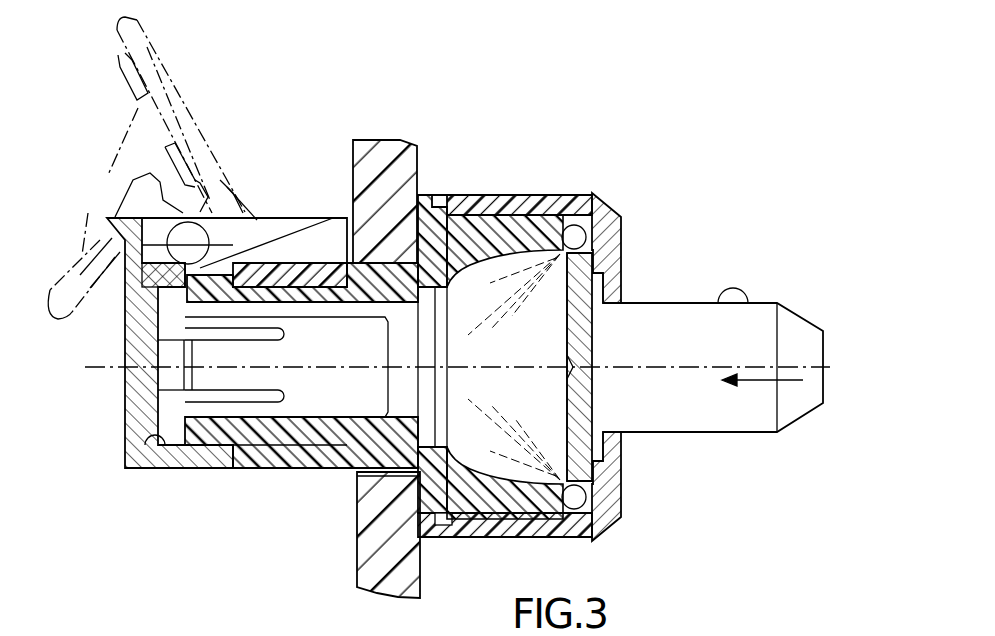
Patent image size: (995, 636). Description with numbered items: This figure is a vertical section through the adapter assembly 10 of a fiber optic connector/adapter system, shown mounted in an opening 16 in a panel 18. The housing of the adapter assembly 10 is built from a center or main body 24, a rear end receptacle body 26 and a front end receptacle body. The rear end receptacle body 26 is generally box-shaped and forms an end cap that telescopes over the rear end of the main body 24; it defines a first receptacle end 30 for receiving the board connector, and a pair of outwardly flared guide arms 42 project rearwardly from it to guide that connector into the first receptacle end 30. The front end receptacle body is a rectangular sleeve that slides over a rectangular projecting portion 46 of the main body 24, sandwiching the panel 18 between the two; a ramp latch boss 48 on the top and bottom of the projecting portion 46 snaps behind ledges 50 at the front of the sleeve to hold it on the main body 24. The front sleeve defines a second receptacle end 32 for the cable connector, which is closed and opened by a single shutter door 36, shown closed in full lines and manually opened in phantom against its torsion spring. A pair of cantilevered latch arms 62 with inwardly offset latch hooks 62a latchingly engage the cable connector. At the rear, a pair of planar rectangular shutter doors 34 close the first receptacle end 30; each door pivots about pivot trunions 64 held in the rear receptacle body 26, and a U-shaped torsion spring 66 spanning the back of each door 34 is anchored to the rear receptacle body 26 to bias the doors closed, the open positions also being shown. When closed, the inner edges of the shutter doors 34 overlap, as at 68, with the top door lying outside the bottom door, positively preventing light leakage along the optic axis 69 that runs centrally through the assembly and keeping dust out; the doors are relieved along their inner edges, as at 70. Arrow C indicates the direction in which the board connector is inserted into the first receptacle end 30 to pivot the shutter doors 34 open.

The adapter assembly 10 is at (457, 266).
The opening 16 is at (345, 262).
The panel 18 is at (370, 172).
The main body 24 is at (452, 229).
The rear end receptacle body 26 is at (566, 191).
The first receptacle end 30 is at (605, 287).
The second receptacle end 32 is at (116, 451).
The shutter doors 34 is at (590, 312).
The shutter door 36 is at (88, 213).
The guide arms 42 is at (718, 420).
The projecting portion 46 is at (323, 450).
The ramp latch boss 48 is at (230, 443).
The ledges 50 is at (247, 457).
The latch arms 62 is at (227, 375).
The latch hooks 62a is at (192, 357).
The pivot trunions 64 is at (607, 217).
The torsion spring 66 is at (514, 367).
The overlap 68 is at (580, 370).
The optic axis 69 is at (723, 367).
The relief 70 is at (585, 353).
The insertion direction arrow C is at (765, 392).